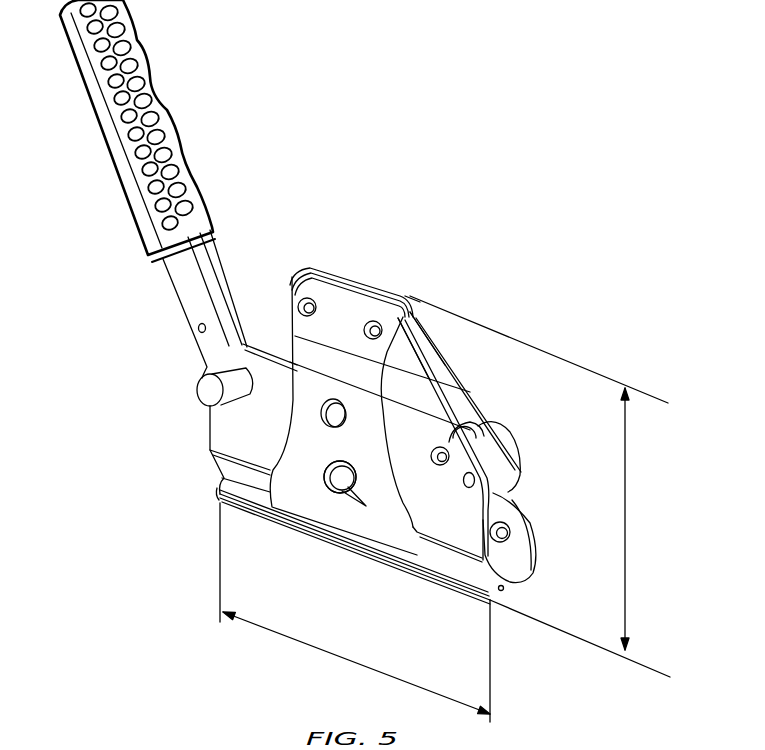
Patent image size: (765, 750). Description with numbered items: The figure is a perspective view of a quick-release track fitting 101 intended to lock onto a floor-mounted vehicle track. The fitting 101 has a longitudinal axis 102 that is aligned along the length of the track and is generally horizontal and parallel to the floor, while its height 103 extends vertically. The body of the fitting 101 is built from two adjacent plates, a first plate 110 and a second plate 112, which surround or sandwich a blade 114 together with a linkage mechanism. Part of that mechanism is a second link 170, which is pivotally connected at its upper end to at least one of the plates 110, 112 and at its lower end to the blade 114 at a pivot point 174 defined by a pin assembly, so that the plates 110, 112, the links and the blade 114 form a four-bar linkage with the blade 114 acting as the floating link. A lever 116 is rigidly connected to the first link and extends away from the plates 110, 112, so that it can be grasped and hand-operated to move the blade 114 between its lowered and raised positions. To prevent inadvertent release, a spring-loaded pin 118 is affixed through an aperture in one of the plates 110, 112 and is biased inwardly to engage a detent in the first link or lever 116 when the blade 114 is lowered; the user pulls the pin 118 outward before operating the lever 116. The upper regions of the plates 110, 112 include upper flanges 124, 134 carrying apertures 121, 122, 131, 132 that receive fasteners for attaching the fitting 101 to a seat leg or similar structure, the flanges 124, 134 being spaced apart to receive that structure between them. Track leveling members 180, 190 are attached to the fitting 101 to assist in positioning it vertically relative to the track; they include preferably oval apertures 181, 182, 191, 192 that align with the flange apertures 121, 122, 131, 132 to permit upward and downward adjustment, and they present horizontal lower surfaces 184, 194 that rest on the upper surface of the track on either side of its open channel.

The quick-release track fitting 101 is at (630, 302).
The longitudinal axis 102 is at (355, 612).
The height 103 is at (646, 519).
The first plate 110 is at (400, 374).
The second plate 112 is at (420, 362).
The blade 114 is at (513, 565).
The lever 116 is at (167, 123).
The spring-loaded pin 118 is at (197, 380).
The aperture 121 is at (372, 244).
The aperture 122 is at (477, 294).
The upper flange 124 is at (283, 324).
The aperture 131 is at (372, 244).
The aperture 132 is at (477, 294).
The upper flange 134 is at (410, 298).
The second link 170 is at (490, 470).
The pivot point 174 is at (500, 533).
The track leveling member 180 is at (379, 452).
The aperture 181 is at (372, 244).
The aperture 182 is at (477, 294).
The horizontal lower surface 184 is at (320, 513).
The track leveling member 190 is at (362, 270).
The aperture 191 is at (290, 292).
The aperture 192 is at (374, 331).
The horizontal lower surface 194 is at (397, 590).